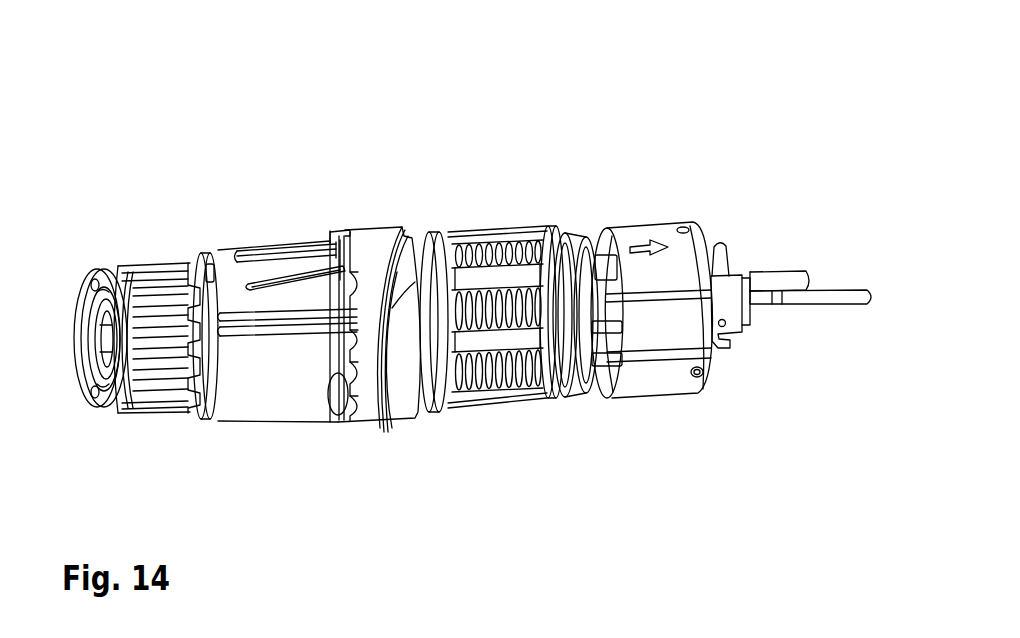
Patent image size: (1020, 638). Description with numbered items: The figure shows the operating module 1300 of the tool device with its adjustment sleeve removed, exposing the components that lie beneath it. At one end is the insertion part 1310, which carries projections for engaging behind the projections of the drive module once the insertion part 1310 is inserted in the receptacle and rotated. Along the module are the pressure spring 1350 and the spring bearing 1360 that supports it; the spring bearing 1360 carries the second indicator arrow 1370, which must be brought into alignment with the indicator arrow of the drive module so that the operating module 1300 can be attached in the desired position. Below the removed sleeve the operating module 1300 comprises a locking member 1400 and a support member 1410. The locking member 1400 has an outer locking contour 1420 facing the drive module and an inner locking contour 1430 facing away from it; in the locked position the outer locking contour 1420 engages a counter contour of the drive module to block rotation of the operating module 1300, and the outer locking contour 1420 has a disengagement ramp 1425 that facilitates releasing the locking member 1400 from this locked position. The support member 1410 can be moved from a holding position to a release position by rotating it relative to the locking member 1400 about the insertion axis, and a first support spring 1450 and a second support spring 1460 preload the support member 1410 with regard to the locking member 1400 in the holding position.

The operating module 1300 is at (150, 100).
The insertion part 1310 is at (724, 312).
The pressure spring 1350 is at (565, 398).
The spring bearing 1360 is at (670, 386).
The second indicator arrow 1370 is at (636, 242).
The locking member 1400 is at (375, 268).
The support member 1410 is at (257, 388).
The outer locking contour 1420 is at (424, 418).
The disengagement ramp 1425 is at (385, 424).
The inner locking contour 1430 is at (325, 395).
The first support spring 1450 is at (287, 250).
The second support spring 1460 is at (252, 276).